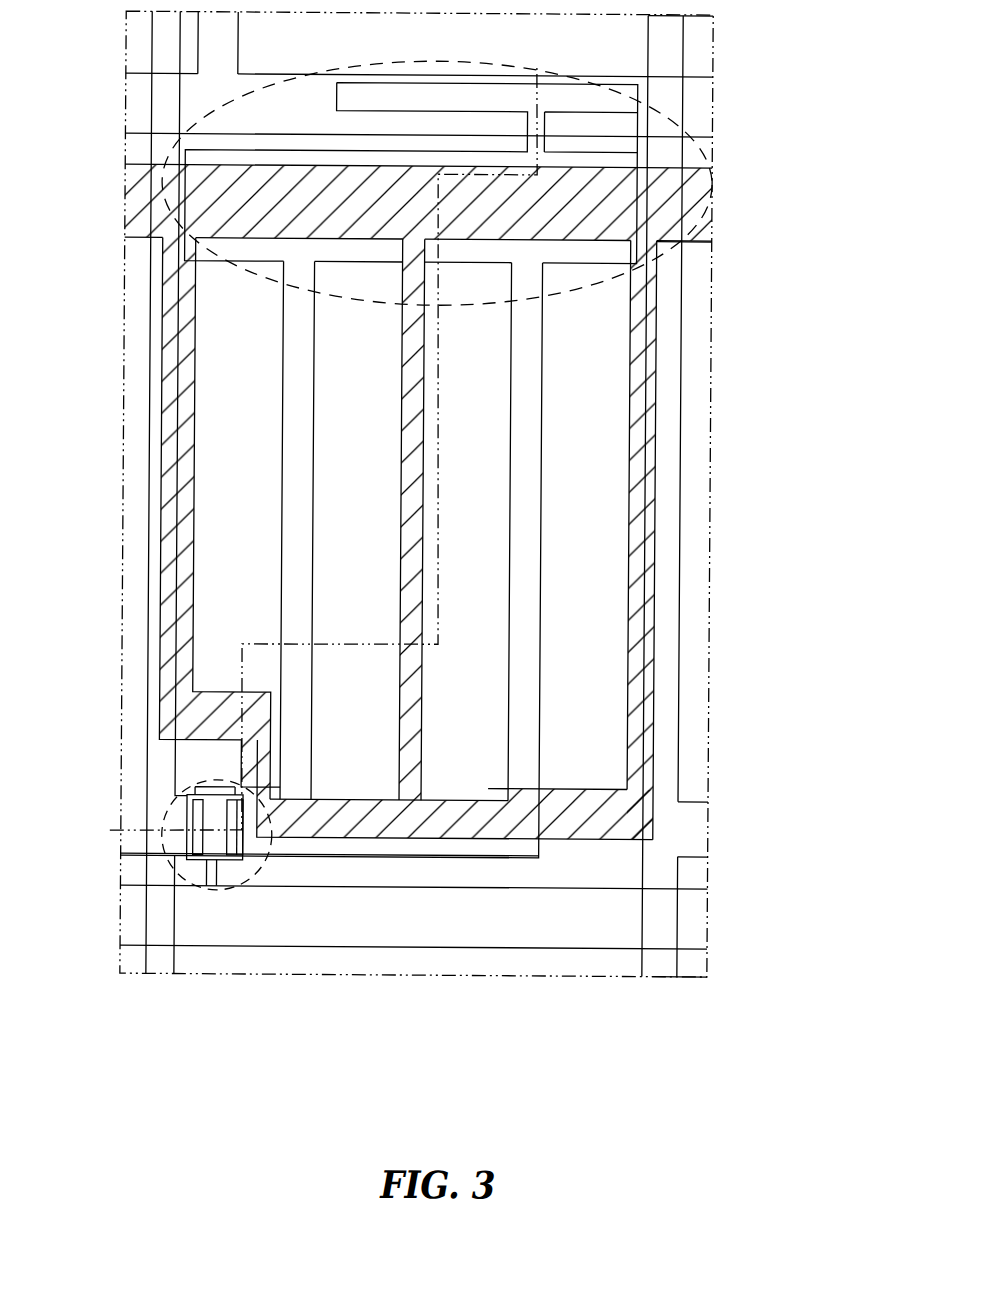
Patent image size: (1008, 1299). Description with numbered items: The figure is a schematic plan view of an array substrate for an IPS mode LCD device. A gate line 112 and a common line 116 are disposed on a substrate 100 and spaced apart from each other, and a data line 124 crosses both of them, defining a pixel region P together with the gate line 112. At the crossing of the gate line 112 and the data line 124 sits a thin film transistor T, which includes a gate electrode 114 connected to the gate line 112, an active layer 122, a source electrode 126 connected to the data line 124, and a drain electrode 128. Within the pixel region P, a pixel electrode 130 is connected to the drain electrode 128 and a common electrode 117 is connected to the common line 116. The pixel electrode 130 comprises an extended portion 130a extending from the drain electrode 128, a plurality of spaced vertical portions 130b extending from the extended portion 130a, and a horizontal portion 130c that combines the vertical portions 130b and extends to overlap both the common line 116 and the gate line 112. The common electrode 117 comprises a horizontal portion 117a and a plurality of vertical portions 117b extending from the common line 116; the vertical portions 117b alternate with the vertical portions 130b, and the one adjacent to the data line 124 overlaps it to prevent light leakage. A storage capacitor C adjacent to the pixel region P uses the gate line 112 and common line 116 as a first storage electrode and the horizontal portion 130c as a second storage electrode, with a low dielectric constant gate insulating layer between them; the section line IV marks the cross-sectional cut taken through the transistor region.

The substrate 100 is at (712, 564).
The gate line 112 is at (583, 928).
The gate electrode 114 is at (206, 778).
The common line 116 is at (710, 250).
The common electrode 117 is at (800, 757).
The horizontal portion 117a is at (657, 810).
The vertical portions 117b is at (657, 752).
The active layer 122 is at (212, 888).
The data line 124 is at (150, 540).
The source electrode 126 is at (192, 797).
The drain electrode 128 is at (283, 822).
The pixel electrode 130 is at (477, 1035).
The extended portion 130a is at (413, 850).
The vertical portions 130b is at (523, 767).
The horizontal portion 130c is at (638, 247).
The storage capacitor C is at (494, 307).
The thin film transistor T is at (236, 884).
The pixel region P is at (704, 377).
The section line IV- IV is at (319, 442).